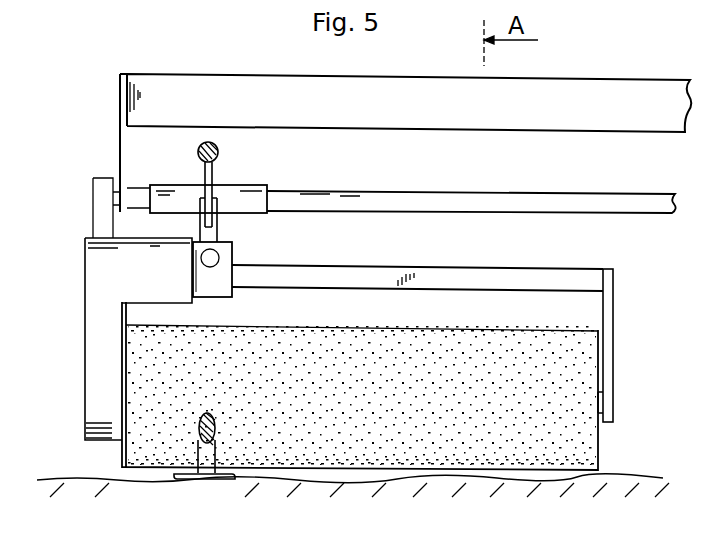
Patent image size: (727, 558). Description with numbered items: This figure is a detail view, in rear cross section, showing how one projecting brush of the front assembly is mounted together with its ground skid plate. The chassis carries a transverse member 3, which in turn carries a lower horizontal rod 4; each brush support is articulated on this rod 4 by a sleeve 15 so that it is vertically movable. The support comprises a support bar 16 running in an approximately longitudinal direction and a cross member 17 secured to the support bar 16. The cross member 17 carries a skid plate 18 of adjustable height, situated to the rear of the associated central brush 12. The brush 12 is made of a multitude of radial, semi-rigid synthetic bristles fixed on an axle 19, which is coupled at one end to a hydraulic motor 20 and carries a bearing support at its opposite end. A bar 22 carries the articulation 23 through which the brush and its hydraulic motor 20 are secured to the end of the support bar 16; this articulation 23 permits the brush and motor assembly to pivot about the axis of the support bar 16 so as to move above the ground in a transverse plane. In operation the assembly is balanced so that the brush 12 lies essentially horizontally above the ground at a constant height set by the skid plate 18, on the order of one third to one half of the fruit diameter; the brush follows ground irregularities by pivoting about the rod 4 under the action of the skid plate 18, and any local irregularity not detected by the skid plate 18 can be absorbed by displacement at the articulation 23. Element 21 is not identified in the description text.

The transverse member 3 is at (192, 85).
The lower horizontal rod 4 is at (346, 190).
The central brush 12 is at (142, 443).
The sleeve 15 is at (256, 187).
The support bar 16 is at (218, 232).
The cross member 17 is at (197, 153).
The skid plate 18 is at (200, 452).
The axle 19 is at (602, 397).
The hydraulic motor 20 is at (93, 335).
The post 21 is at (608, 334).
The bar 22 is at (386, 266).
The articulation 23 is at (232, 249).